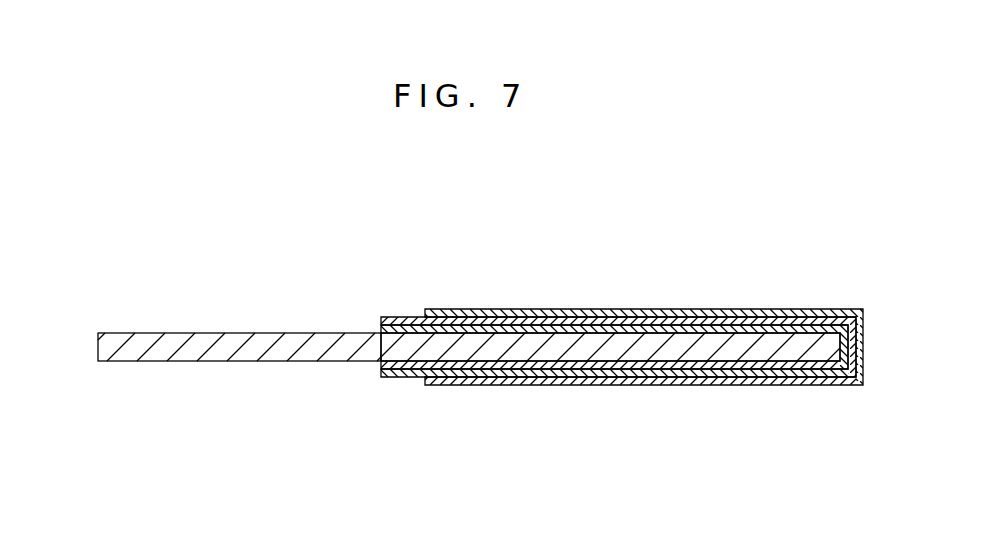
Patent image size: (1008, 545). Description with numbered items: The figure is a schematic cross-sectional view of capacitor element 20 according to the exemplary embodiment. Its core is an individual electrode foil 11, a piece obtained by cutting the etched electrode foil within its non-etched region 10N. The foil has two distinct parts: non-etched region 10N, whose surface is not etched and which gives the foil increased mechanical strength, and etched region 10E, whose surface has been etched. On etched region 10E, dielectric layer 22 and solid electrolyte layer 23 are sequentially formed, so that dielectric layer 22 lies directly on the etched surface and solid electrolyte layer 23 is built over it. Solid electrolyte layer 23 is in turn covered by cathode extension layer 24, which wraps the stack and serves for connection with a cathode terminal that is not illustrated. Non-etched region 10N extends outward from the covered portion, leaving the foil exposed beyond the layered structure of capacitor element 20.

The electrode foil 11 is at (469, 276).
The non-etched region 10N is at (196, 348).
The etched region 10E is at (401, 345).
The capacitor element 20 is at (622, 289).
The dielectric layer 22 is at (843, 328).
The solid electrolyte layer 23 is at (772, 322).
The cathode extension layer 24 is at (693, 313).